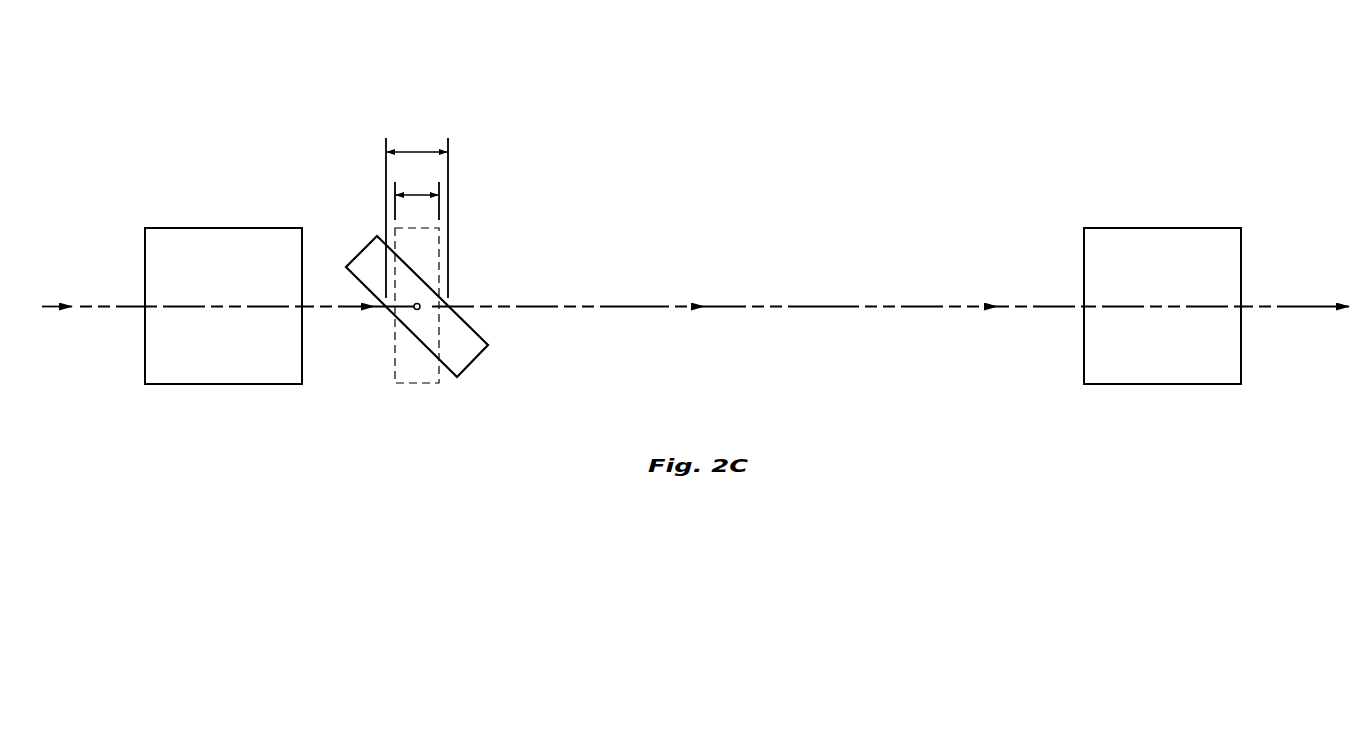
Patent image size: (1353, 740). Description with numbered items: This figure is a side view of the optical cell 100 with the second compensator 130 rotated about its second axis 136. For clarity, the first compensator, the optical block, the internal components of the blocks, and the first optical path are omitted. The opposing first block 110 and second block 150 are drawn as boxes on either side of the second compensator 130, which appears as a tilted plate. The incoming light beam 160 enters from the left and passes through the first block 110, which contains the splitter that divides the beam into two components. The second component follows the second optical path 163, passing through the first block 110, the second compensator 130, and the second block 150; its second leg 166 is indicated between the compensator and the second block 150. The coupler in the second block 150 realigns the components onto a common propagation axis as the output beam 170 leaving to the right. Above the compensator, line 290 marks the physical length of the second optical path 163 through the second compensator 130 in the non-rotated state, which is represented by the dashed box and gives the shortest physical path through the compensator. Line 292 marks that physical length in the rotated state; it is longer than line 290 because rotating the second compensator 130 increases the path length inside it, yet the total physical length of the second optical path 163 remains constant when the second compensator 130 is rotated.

The optical cell 100 is at (328, 96).
The first block 110 is at (238, 228).
The second compensator 130 is at (478, 332).
The second axis of rotation 136 is at (421, 304).
The second block 150 is at (1144, 228).
The light beam 160 is at (108, 304).
The second optical path 163 is at (817, 306).
The second leg 166 is at (627, 306).
The output beam 170 is at (1277, 306).
The line 290 is at (417, 195).
The line 292 is at (418, 152).